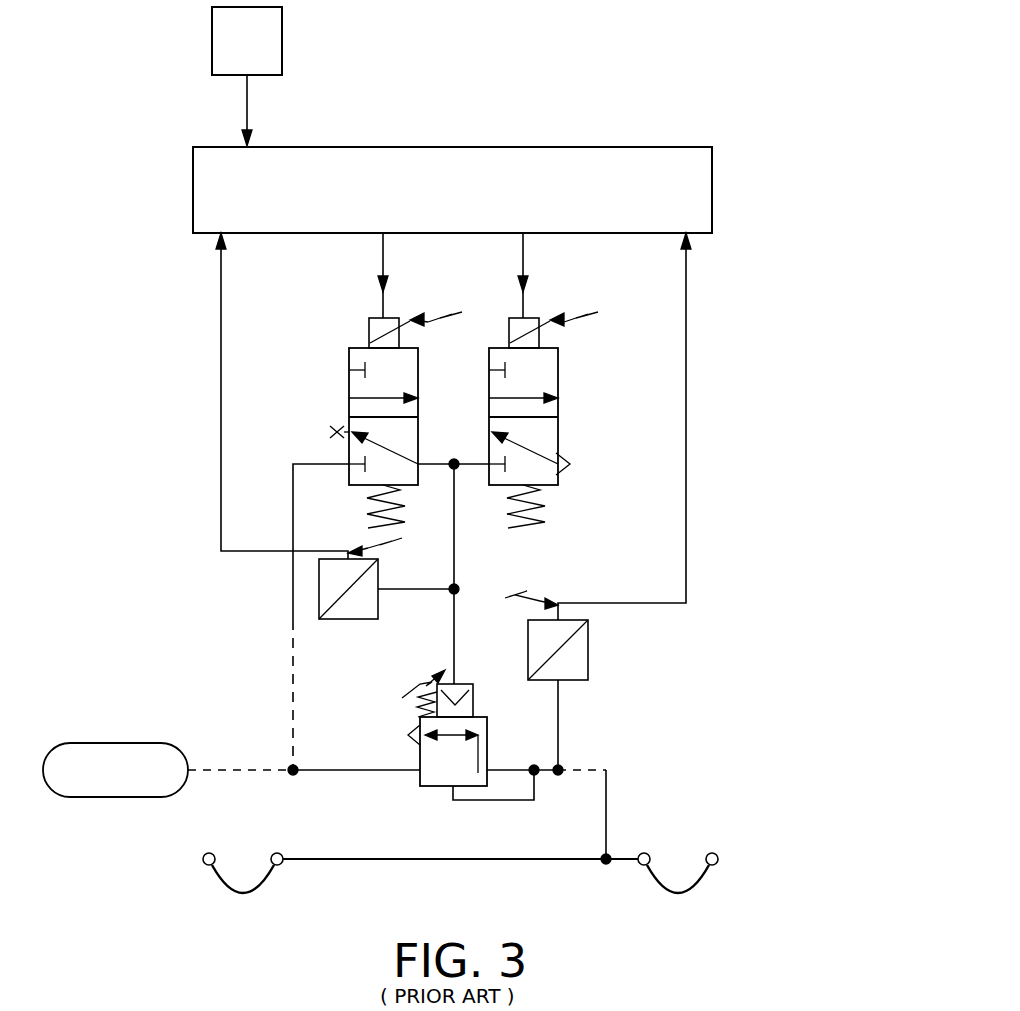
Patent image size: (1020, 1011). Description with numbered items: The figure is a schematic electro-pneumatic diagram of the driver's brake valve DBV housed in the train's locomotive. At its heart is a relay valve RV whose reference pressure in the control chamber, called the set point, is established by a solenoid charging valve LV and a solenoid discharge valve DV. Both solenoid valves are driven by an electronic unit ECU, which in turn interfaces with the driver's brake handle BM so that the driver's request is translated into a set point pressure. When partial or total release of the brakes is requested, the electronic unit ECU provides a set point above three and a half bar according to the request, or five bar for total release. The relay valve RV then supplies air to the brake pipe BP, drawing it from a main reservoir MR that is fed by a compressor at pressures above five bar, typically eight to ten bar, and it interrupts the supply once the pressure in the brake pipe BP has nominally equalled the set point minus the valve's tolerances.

The driver's brake handle BM is at (212, 52).
The electronic unit ECU is at (596, 170).
The solenoid charging valve LV is at (347, 385).
The solenoid discharge valve DV is at (561, 381).
The driver's brake valve DBV is at (735, 482).
The relay valve RV is at (418, 778).
The main reservoir MR is at (130, 742).
The brake pipe BP is at (366, 870).